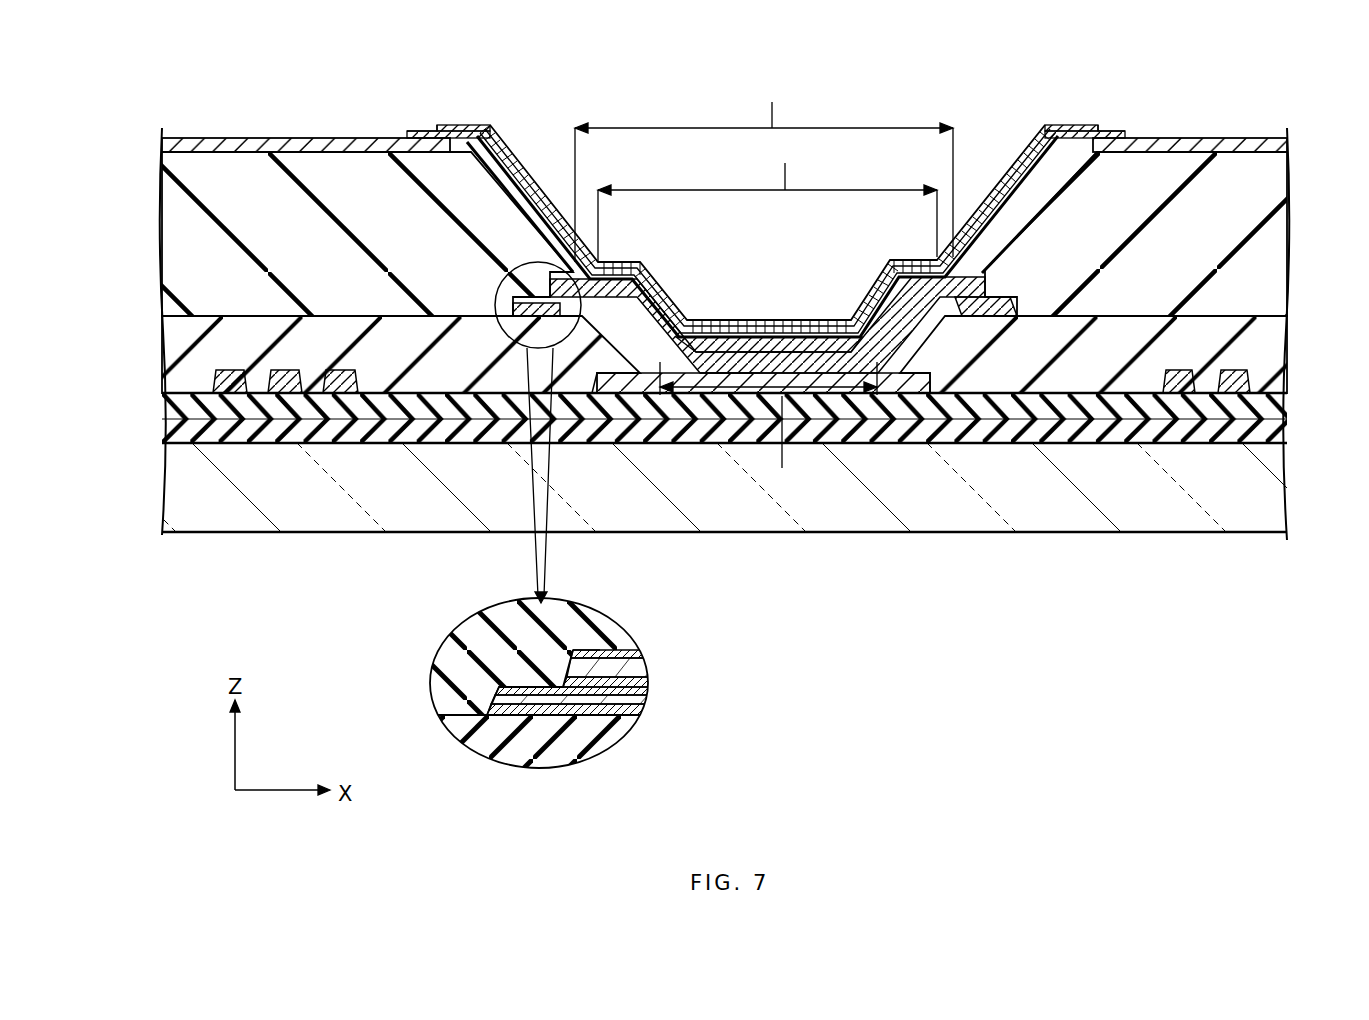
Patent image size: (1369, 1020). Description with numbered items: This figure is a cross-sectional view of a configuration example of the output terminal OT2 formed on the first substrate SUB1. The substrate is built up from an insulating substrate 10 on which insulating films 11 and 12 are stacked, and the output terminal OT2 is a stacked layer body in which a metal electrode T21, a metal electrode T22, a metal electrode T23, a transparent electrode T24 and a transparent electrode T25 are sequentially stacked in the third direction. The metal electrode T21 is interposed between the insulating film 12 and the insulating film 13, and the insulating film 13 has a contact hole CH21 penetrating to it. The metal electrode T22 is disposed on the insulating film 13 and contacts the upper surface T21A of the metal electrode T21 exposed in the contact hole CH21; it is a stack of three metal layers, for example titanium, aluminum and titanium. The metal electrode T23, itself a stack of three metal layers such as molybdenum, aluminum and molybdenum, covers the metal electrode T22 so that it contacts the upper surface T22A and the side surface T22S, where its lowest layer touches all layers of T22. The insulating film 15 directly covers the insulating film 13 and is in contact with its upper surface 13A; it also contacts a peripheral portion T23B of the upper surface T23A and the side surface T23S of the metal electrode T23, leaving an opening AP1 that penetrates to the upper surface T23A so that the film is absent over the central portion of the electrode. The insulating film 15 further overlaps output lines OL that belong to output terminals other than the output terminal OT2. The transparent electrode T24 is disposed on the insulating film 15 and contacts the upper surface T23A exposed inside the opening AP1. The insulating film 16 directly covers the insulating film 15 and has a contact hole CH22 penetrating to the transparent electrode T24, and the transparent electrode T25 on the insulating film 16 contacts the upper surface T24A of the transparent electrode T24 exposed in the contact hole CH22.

The insulating substrate 10 is at (1275, 497).
The insulating film 11 is at (1270, 437).
The insulating film 12 is at (1270, 402).
The insulating film 13 is at (1270, 352).
The upper surface of insulating film 13 13A is at (1174, 313).
The insulating film 15 is at (178, 240).
The insulating film 16 is at (1280, 143).
The output line OL is at (230, 388).
The first substrate SUB1 is at (176, 578).
The output terminal OT2 is at (919, 101).
The opening AP1 is at (764, 171).
The contact hole CH22 is at (767, 202).
The contact hole CH21 is at (768, 427).
The metal electrode T21 is at (906, 395).
The metal electrode T22 is at (892, 335).
The metal electrode T23 is at (957, 287).
The transparent electrode T24 is at (1012, 240).
The transparent electrode T25 is at (1040, 143).
The upper surface of metal electrode T21 T21A is at (720, 364).
The upper surface of metal electrode T22 T22A is at (751, 347).
The upper surface of metal electrode T23 T23A is at (788, 331).
The upper surface of transparent electrode T24 T24A is at (824, 318).
The side surface of metal electrode T23 T23S is at (503, 306).
The side surface of metal electrode T22 T22S is at (542, 297).
The peripheral portion of upper surface T23A T23B is at (607, 644).